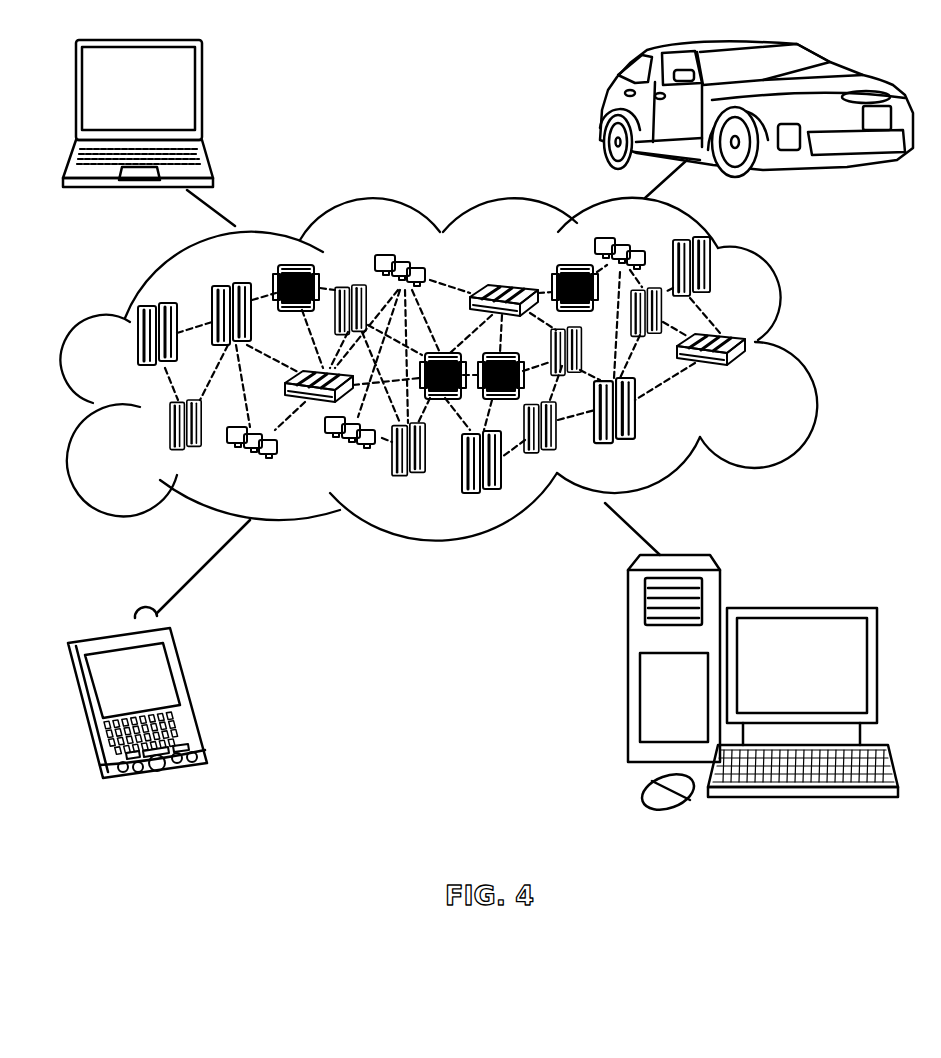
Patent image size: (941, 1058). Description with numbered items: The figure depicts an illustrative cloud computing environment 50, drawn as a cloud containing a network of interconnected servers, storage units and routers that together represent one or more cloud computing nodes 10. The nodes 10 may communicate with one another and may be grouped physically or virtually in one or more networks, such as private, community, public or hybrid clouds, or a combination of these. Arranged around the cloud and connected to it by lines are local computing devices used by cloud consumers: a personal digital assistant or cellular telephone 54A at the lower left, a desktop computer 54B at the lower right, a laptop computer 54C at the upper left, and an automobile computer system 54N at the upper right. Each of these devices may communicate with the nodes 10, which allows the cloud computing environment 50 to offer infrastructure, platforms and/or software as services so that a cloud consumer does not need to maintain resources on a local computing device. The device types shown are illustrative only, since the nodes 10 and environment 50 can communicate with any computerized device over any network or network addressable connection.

The cloud computing environment 50 is at (797, 342).
The cloud computing nodes 10 is at (749, 374).
The personal digital assistant (PDA) or cellular telephone 54A is at (193, 693).
The desktop computer 54B is at (800, 607).
The laptop computer 54C is at (202, 97).
The automobile computer system 54N is at (600, 113).